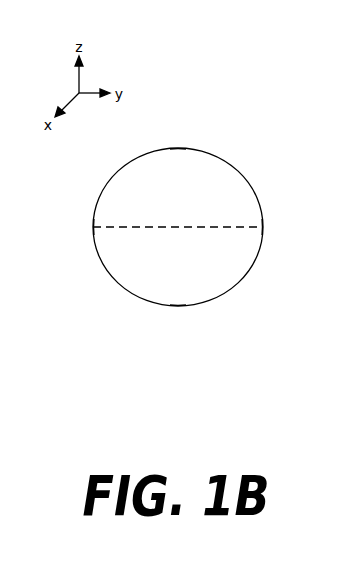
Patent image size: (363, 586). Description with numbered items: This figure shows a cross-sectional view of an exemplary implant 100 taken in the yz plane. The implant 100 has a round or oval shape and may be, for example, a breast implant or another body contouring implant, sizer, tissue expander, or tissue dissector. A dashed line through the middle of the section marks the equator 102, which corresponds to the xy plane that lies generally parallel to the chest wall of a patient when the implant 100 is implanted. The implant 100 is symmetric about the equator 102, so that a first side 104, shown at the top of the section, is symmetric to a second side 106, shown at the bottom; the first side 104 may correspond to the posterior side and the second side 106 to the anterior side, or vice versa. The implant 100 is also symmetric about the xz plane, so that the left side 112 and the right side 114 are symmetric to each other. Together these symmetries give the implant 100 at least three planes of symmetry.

The implant 100 is at (200, 307).
The equator 102 is at (241, 224).
The first side 104 is at (178, 148).
The second side 106 is at (178, 305).
The left side 112 is at (93, 227).
The right side 114 is at (263, 227).